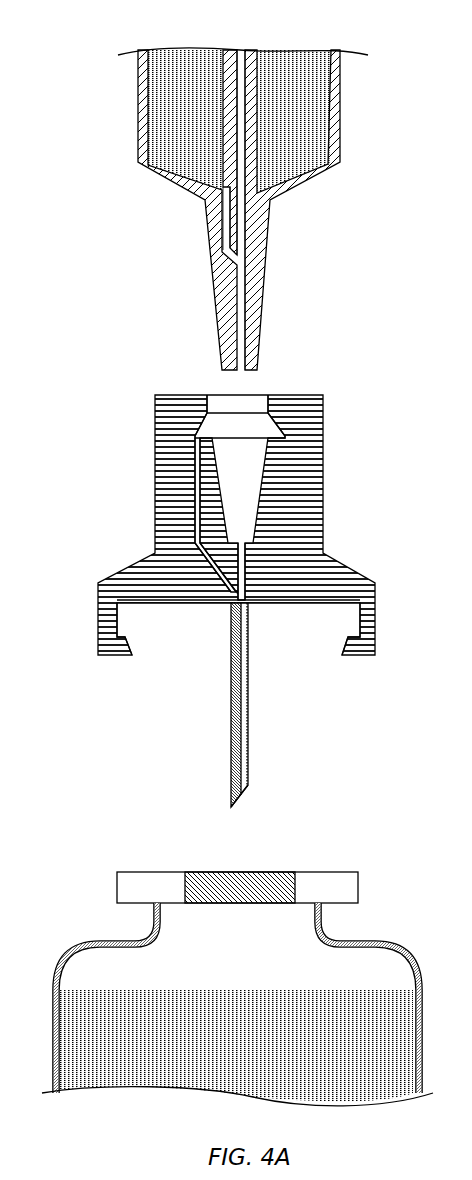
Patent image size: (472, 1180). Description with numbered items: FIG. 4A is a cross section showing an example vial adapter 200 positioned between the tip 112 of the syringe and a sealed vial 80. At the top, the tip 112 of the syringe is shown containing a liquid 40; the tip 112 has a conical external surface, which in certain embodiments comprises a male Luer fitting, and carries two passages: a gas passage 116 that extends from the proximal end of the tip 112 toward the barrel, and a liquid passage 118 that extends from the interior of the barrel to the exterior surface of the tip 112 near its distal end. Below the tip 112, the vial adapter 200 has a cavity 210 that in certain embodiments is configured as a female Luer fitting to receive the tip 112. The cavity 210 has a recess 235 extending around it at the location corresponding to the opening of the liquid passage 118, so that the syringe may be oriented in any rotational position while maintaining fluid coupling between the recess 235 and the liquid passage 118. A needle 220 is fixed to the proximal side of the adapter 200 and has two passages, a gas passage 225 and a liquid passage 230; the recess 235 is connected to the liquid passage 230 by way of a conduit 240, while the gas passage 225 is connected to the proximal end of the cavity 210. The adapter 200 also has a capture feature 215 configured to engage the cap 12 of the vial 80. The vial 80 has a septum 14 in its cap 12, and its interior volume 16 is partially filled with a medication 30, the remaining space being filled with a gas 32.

The tip 112 is at (258, 210).
The gas passage 116 is at (245, 150).
The liquid passage 118 is at (228, 215).
The liquid 40 is at (200, 130).
The vial adapter 200 is at (141, 478).
The cavity 210 is at (263, 392).
The recess 235 is at (196, 428).
The vent conduit 240 is at (229, 552).
The capture feature 215 is at (337, 647).
The liquid passage 230 is at (222, 651).
The needle 220 is at (231, 765).
The gas passage 225 is at (246, 806).
The vial 80 is at (89, 885).
The cap 12 is at (338, 878).
The septum 14 is at (258, 877).
The interior volume 16 is at (108, 963).
The gas 32 is at (184, 973).
The medication 30 is at (322, 1048).